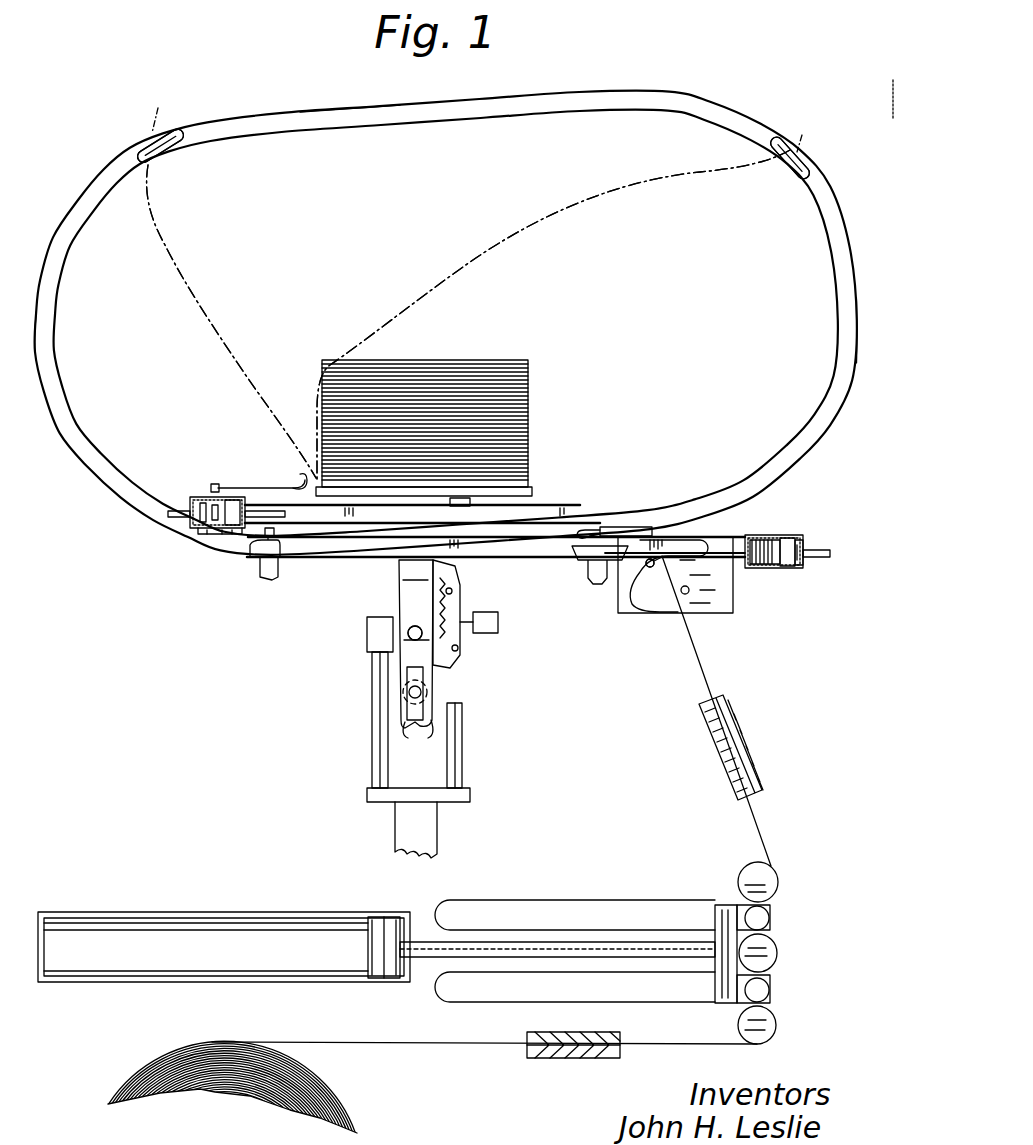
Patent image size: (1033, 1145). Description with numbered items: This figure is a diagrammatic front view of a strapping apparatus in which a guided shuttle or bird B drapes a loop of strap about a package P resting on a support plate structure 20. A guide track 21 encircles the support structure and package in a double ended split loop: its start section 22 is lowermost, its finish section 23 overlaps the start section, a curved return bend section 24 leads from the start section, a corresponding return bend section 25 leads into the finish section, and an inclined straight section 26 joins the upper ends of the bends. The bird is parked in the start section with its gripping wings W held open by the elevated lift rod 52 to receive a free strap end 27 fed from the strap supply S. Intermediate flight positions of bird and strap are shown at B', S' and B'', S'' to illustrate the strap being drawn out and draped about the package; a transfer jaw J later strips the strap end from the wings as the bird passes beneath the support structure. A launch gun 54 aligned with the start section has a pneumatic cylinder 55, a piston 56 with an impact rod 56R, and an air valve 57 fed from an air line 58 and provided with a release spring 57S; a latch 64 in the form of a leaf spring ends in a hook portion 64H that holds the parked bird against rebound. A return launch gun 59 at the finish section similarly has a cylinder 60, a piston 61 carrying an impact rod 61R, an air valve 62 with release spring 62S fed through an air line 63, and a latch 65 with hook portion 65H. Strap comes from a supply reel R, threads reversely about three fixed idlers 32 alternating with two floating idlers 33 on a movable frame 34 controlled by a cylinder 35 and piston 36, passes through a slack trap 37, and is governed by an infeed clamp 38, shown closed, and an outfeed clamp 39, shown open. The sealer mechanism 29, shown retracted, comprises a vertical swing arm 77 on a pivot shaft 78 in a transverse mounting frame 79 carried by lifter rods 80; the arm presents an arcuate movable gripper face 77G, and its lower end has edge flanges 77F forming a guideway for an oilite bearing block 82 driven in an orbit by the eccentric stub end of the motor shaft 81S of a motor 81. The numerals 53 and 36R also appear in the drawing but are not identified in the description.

The inclined straight section 26 is at (420, 101).
The guide track 21 is at (340, 134).
The curved return bend section 24 is at (53, 337).
The curved return bend section 25 is at (830, 344).
The intermediate shuttle flight position B' is at (160, 123).
The intermediate shuttle flight position B'' is at (790, 144).
The intermediate strap position S' is at (231, 321).
The intermediate strap position S'' is at (553, 315).
The package P is at (478, 360).
The support plate structure 20 is at (520, 492).
The transfer jaw J is at (470, 500).
The start section 22 is at (530, 559).
The finish section 23 is at (311, 559).
The return launch gun 59 is at (206, 497).
The air line 63 is at (176, 511).
The impact rod 61R is at (244, 500).
The latch 65 is at (256, 488).
The hook portion 65H is at (310, 476).
The air valve 62 is at (196, 530).
The pneumatic cylinder 60 is at (208, 531).
The piston 61 is at (222, 531).
The release spring 62S is at (233, 532).
The stop block 53 is at (262, 582).
The vertical swing arm 77 is at (400, 600).
The movable gripper face 77G is at (405, 562).
The vertical edge flanges 77F is at (416, 732).
The sealer mechanism 29 is at (372, 630).
The transverse mounting frame 79 is at (375, 660).
The lifter rods 80 is at (462, 760).
The motor shaft 81S is at (410, 700).
The motor 81 is at (420, 690).
The oilite bearing block 82 is at (428, 693).
The pivot shaft 78 is at (412, 638).
The slack trap 37 is at (733, 598).
The free strap end 27 is at (655, 531).
The lift rod 52 is at (606, 585).
The impact rod 56R is at (705, 549).
The launch gun 54 is at (780, 534).
The pneumatic cylinder 55 is at (762, 538).
The piston 56 is at (796, 545).
The air valve 57 is at (803, 560).
The release spring 57S is at (797, 568).
The air line 58 is at (815, 550).
The latch 64 is at (646, 527).
The hook portion 64H is at (585, 528).
The gripping wings W is at (612, 528).
The shuttle or bird B is at (592, 580).
The strap supply S is at (716, 711).
The outfeed clamp 39 is at (752, 736).
The fixed idlers 32 is at (775, 876).
The floating idlers 33 is at (769, 918).
The movable frame 34 is at (725, 905).
The piston rod 36R is at (460, 942).
The cylinder 35 is at (188, 912).
The piston 36 is at (380, 917).
The supply reel R is at (208, 1052).
The infeed clamp 38 is at (545, 1058).